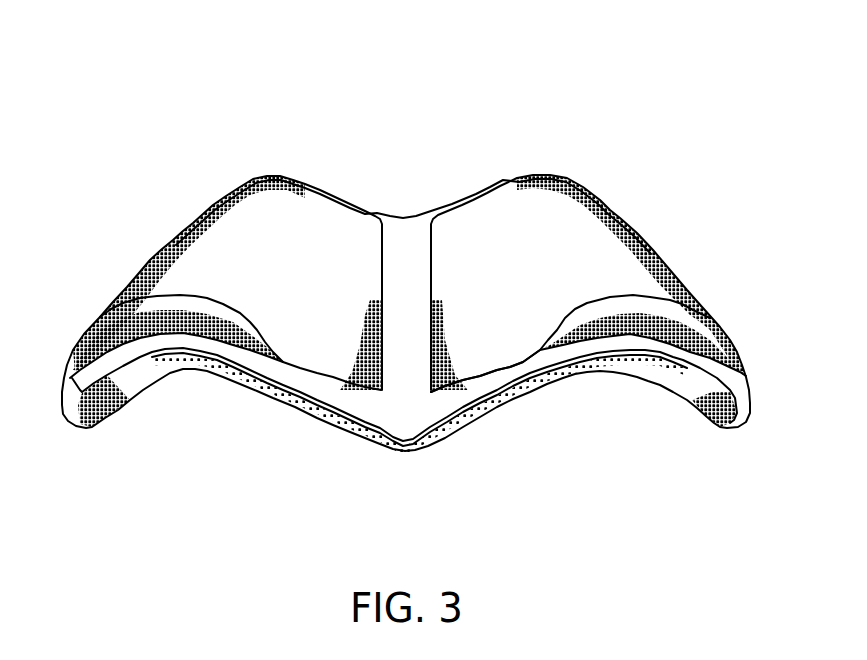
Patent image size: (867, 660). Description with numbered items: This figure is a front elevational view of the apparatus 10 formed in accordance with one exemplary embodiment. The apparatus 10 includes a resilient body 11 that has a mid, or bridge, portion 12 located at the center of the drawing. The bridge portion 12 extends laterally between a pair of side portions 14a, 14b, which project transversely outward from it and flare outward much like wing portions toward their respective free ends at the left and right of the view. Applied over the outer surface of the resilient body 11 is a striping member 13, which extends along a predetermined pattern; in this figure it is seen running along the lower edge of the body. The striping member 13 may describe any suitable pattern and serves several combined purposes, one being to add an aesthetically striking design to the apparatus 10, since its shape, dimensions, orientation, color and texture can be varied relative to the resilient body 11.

The apparatus 10 is at (585, 33).
The resilient body 11 is at (318, 197).
The bridge portion 12 is at (473, 216).
The striping member 13 is at (407, 420).
The side portion 14a is at (653, 257).
The side portion 14b is at (188, 257).